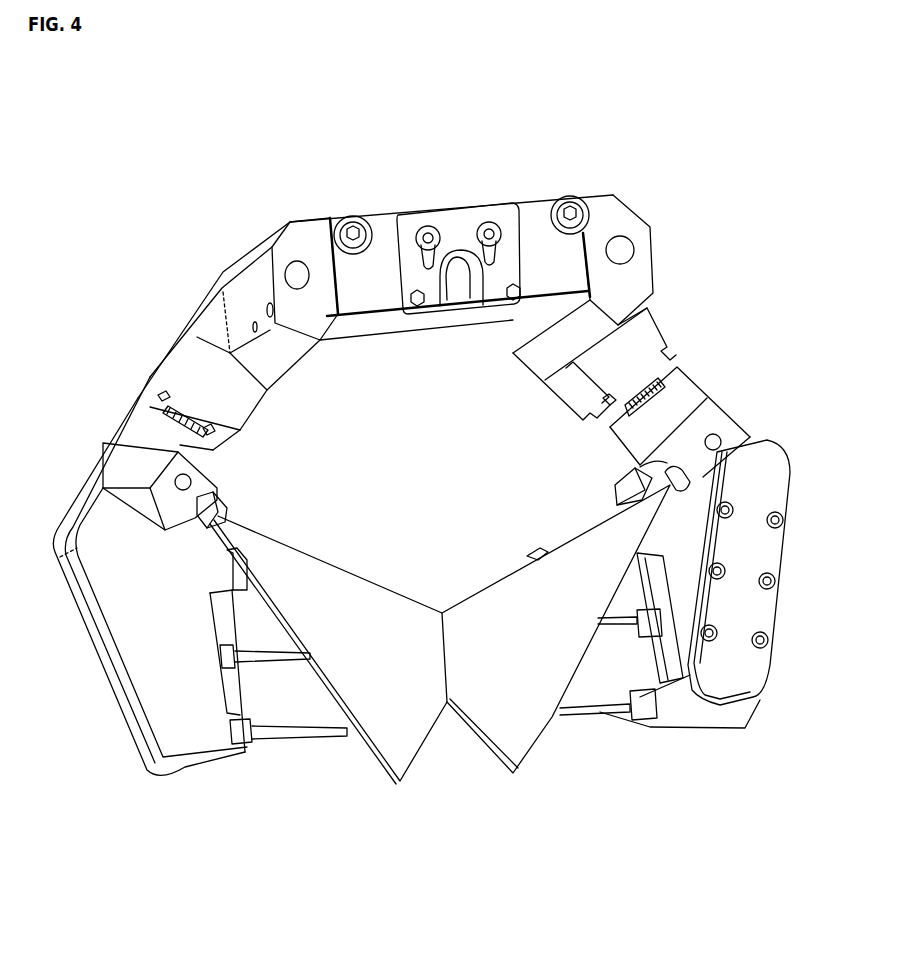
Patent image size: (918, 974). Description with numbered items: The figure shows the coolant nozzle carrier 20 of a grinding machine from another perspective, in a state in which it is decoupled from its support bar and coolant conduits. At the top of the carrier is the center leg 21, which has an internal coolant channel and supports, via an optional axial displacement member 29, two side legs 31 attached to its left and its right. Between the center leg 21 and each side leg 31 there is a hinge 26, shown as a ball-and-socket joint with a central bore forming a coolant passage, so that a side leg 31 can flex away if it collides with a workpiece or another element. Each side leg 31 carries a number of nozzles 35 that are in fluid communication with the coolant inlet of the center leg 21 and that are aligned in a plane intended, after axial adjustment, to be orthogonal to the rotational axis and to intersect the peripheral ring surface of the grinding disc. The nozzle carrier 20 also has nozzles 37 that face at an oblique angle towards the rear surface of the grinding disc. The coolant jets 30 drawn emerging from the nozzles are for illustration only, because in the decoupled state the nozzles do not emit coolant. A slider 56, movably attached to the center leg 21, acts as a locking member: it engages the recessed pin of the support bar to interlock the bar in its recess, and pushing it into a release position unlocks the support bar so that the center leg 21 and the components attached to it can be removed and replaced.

The coolant nozzle carrier 20 is at (570, 148).
The center leg 21 is at (533, 223).
The axial displacement member 29 is at (308, 238).
The slider 56 is at (461, 228).
The hinges 26 is at (125, 404).
The nozzles 37 is at (228, 500).
The side legs 31 is at (174, 630).
The coolant jets 30 is at (397, 682).
The nozzles 35 is at (270, 748).